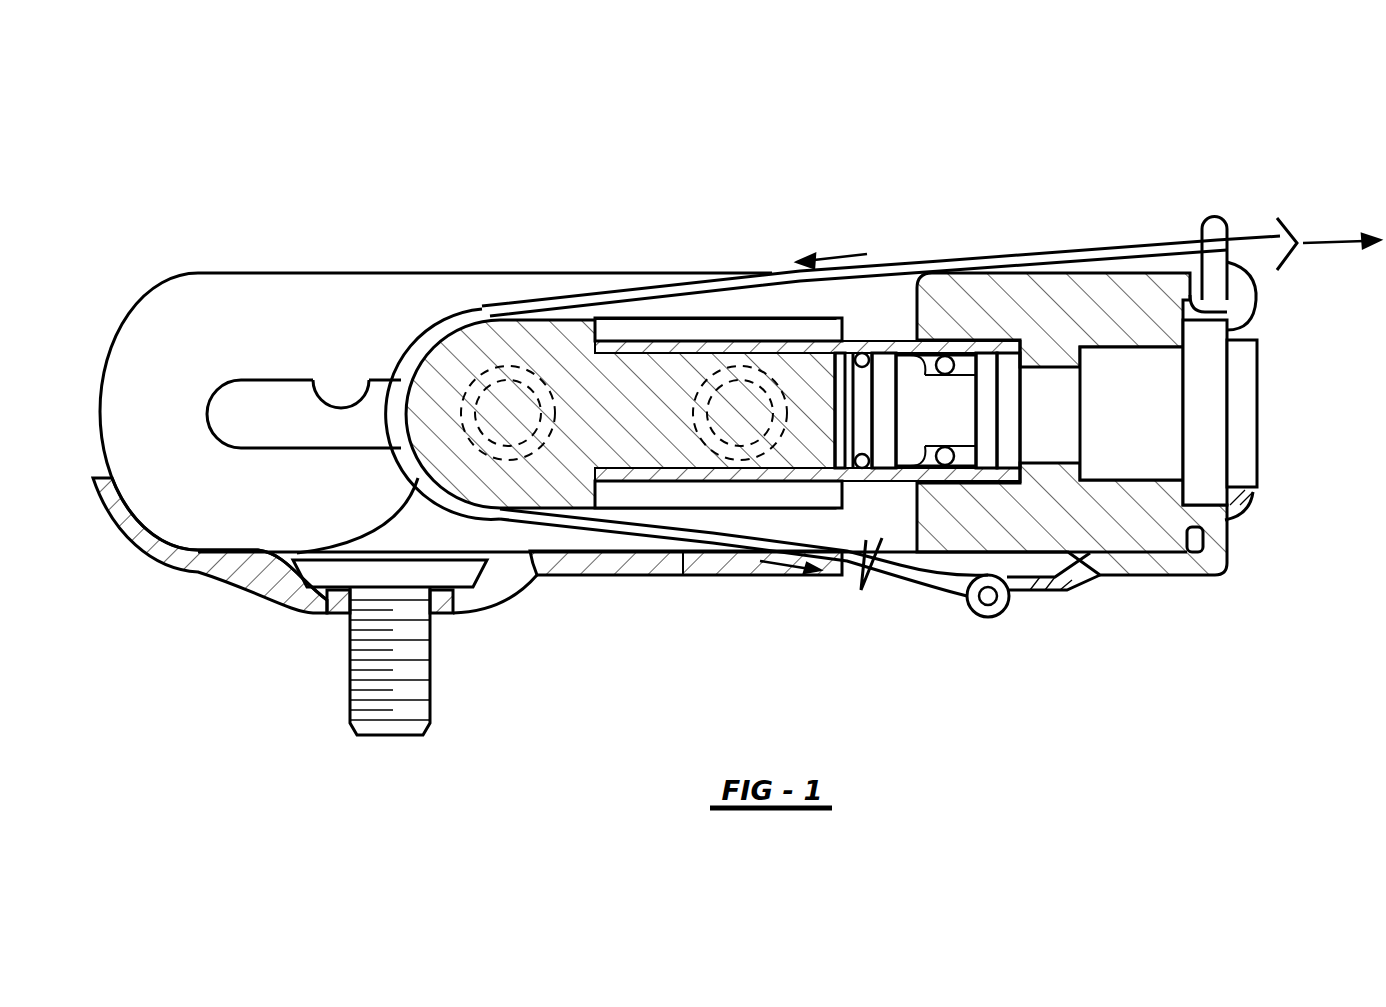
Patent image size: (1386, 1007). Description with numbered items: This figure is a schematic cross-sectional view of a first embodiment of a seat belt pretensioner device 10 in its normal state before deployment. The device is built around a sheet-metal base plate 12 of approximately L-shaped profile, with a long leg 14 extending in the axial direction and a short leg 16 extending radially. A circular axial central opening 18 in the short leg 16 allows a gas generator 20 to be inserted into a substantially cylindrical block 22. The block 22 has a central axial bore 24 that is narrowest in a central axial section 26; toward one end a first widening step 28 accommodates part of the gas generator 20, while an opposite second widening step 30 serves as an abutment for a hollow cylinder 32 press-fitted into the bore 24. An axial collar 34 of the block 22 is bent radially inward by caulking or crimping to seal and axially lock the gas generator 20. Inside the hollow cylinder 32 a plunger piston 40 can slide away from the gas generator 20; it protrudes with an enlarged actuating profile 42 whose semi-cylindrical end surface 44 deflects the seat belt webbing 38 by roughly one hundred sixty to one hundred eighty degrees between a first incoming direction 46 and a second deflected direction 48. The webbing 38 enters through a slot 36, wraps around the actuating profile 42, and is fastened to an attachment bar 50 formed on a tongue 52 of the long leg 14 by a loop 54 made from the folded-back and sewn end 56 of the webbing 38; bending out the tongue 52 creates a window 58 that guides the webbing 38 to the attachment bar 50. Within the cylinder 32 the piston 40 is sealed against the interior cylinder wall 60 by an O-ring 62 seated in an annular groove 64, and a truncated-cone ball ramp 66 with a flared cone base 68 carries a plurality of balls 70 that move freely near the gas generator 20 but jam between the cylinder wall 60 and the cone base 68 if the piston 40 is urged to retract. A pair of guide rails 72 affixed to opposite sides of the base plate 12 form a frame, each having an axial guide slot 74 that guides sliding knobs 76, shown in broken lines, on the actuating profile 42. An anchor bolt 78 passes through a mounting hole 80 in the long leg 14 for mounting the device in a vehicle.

The pretensioner device 10 is at (755, 162).
The base plate 12 is at (597, 563).
The long leg 14 is at (221, 577).
The short leg 16 is at (1233, 300).
The axial central opening 18 is at (1227, 517).
The gas generator 20 is at (1153, 418).
The block 22 is at (1110, 317).
The central axial bore 24 is at (1047, 370).
The central axial section 26 is at (1095, 562).
The first widening step 28 is at (1207, 572).
The second widening step 30 is at (1045, 607).
The hollow cylinder 32 is at (773, 482).
The axial collar 34 is at (1205, 308).
The slot 36 is at (1233, 260).
The seat belt webbing 38 is at (605, 303).
The plunger piston 40 is at (657, 490).
The actuating profile 42 is at (430, 483).
The semi-cylindrical end surface 44 is at (338, 540).
The first incoming direction 46 is at (837, 252).
The second deflected direction 48 is at (782, 572).
The attachment bar 50 is at (987, 610).
The tongue 52 is at (1093, 588).
The loop 54 is at (945, 470).
The end of the seat belt webbing 56 is at (873, 580).
The window 58 is at (707, 566).
The interior cylinder wall 60 is at (740, 362).
The O-ring 62 is at (862, 352).
The annular groove 64 is at (866, 472).
The ball ramp 66 is at (933, 407).
The cone base 68 is at (907, 413).
The balls 70 is at (987, 605).
The guide rails 72 is at (215, 327).
The axial guide slot 74 is at (376, 380).
The sliding knobs 76 is at (508, 395).
The anchor bolt 78 is at (392, 707).
The mounting hole 80 is at (433, 605).